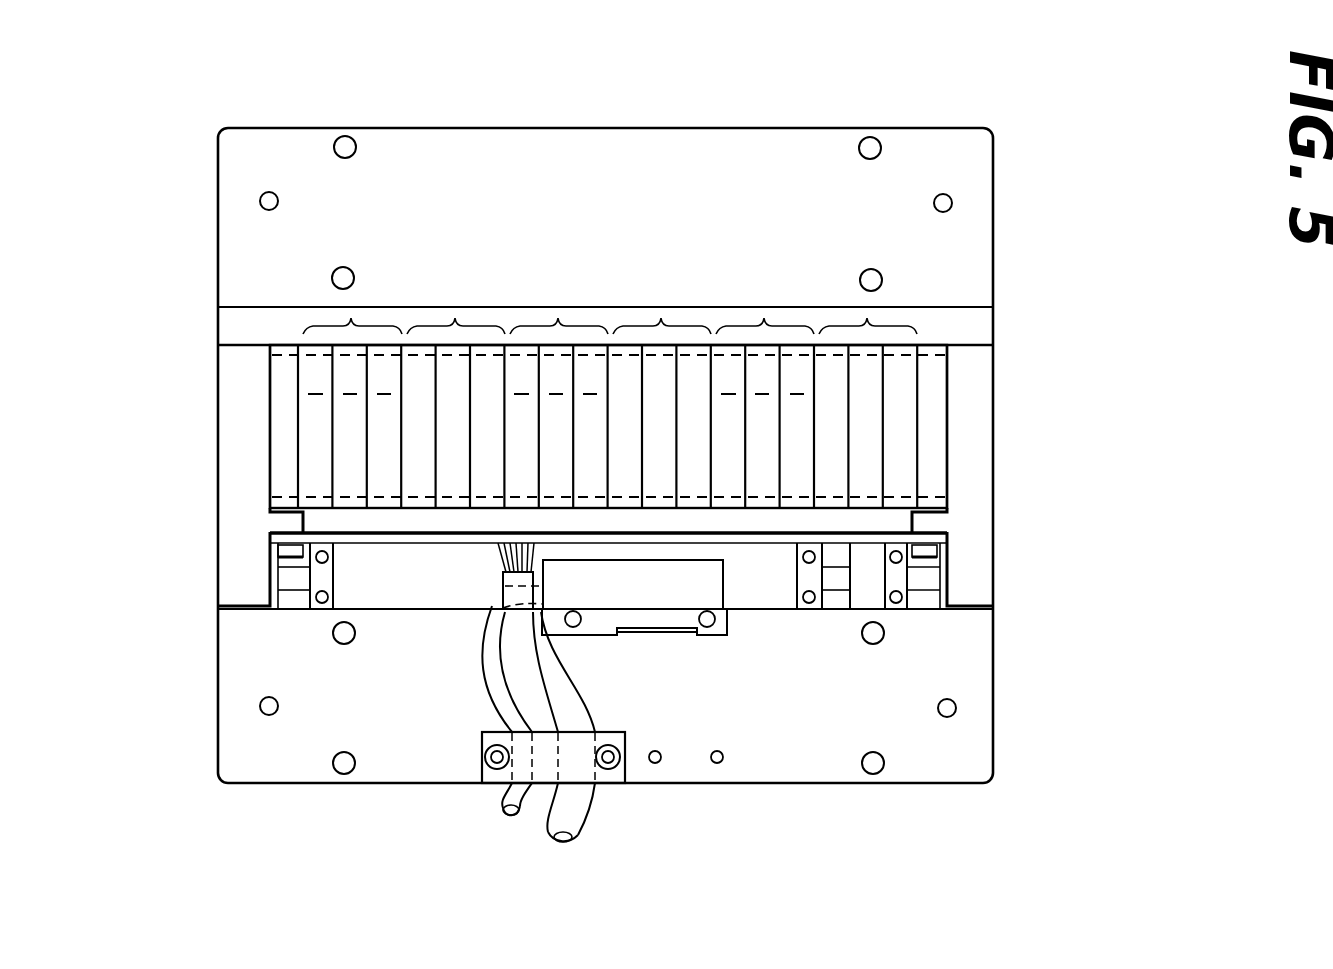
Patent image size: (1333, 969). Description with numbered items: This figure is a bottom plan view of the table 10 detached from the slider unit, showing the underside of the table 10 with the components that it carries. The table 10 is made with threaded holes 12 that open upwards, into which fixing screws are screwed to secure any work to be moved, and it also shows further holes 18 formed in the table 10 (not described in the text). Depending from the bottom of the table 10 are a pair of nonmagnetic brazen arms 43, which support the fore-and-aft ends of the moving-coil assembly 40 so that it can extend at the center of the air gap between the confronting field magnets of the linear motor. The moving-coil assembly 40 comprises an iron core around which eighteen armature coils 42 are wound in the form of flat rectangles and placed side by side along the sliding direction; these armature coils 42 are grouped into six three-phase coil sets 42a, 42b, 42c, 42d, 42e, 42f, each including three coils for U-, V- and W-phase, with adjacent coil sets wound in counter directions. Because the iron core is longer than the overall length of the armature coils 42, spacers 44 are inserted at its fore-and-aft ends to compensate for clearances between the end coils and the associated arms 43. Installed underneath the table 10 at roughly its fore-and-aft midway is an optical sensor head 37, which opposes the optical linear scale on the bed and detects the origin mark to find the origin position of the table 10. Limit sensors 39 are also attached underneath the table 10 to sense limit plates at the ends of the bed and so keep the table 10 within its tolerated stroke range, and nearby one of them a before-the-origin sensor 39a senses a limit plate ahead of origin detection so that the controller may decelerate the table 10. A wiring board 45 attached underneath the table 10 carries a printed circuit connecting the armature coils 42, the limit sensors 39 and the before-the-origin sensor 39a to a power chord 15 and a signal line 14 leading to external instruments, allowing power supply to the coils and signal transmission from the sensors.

The table 10 is at (712, 120).
The threaded holes 12 is at (262, 201).
The signal line 14 is at (578, 808).
The power chord 15 is at (526, 806).
The cover screw holes 18 is at (341, 270).
The optical sensor head 37 is at (658, 615).
The limit sensors 39 is at (290, 578).
The before-the-origin sensor 39a is at (925, 578).
The moving-coil assembly 40 is at (495, 346).
The armature coils 42 is at (897, 453).
The three-phase coil set 42a is at (875, 324).
The three-phase coil set 42b is at (765, 305).
The three-phase coil set 42c is at (662, 305).
The three-phase coil set 42d is at (559, 305).
The three-phase coil set 42e is at (456, 305).
The three-phase coil set 42f is at (343, 324).
The nonmagnetic arms 43 is at (237, 526).
The spacers 44 is at (283, 425).
The wiring board 45 is at (414, 544).